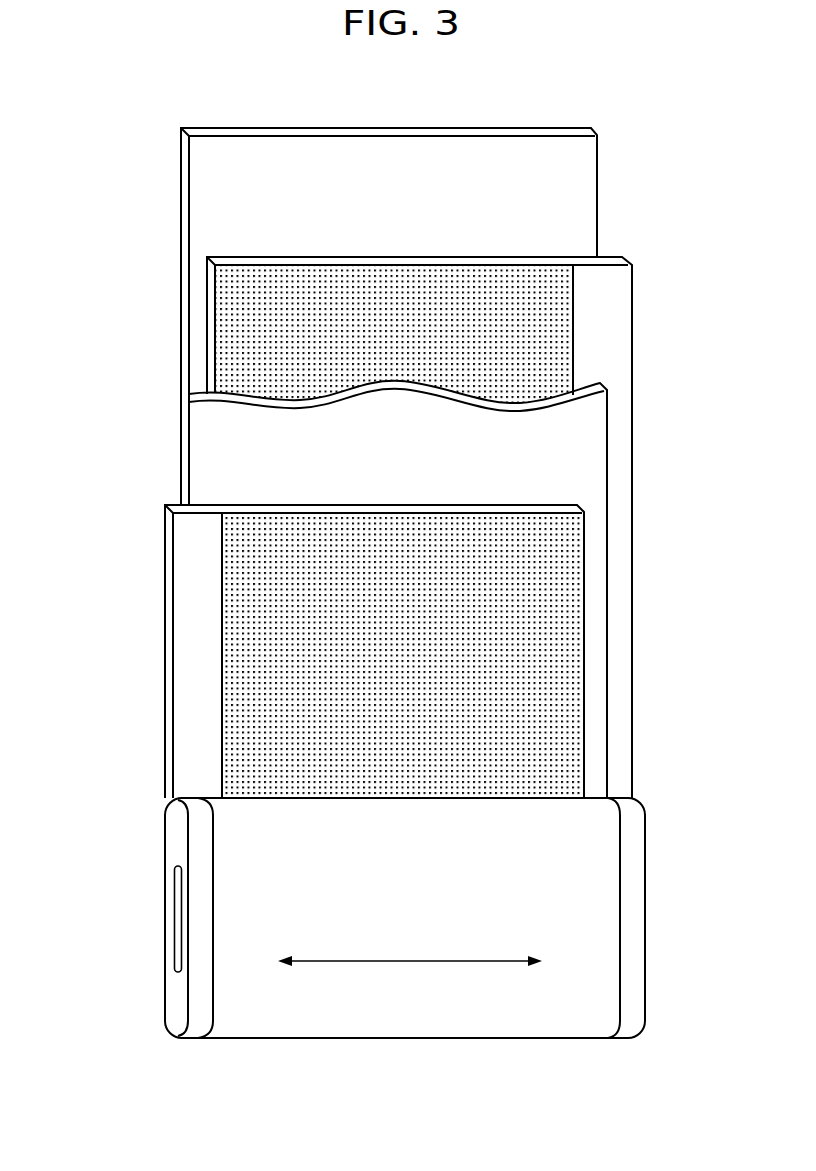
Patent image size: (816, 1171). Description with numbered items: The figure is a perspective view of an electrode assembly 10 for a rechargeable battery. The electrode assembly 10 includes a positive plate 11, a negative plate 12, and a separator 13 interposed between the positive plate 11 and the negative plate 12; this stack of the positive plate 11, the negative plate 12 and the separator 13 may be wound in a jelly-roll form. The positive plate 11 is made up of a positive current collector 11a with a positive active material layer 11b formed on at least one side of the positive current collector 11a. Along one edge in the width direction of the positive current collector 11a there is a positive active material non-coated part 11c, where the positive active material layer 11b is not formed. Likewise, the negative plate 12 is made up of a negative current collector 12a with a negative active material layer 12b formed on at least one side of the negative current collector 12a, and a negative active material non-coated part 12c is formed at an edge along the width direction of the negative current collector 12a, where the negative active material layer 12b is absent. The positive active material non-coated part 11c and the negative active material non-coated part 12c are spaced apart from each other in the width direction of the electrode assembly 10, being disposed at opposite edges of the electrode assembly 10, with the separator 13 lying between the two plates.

The electrode assembly 10 is at (413, 1004).
The positive plate 11 is at (383, 624).
The positive current collector 11a is at (387, 505).
The positive active material layer 11b is at (563, 669).
The positive active material non-coated part 11c is at (190, 710).
The negative plate 12 is at (395, 501).
The negative current collector 12a is at (401, 257).
The negative active material layer 12b is at (213, 314).
The negative active material non-coated part 12c is at (615, 335).
The separator 13 is at (176, 212).